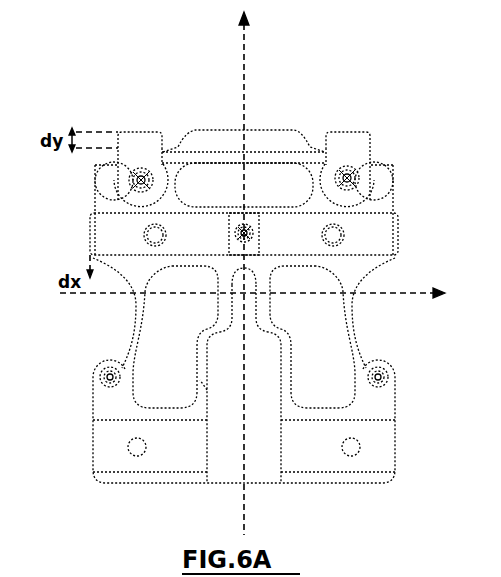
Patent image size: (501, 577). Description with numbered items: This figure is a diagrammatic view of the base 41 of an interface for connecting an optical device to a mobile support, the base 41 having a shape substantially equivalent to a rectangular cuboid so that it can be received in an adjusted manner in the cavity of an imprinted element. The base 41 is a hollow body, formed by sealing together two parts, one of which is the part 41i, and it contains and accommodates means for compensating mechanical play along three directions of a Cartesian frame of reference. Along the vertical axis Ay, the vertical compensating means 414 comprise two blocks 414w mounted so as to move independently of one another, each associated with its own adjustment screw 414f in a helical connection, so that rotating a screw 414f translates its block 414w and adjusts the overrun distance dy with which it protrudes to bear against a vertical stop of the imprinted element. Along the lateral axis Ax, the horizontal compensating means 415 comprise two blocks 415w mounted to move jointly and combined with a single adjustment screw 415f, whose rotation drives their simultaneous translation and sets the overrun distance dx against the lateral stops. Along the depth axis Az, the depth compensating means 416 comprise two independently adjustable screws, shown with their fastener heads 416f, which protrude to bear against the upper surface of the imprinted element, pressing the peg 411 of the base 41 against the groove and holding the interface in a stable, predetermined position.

The base 41 is at (347, 97).
The peg 411 is at (232, 138).
The vertical compensating means 414 is at (145, 131).
The block 414w is at (148, 147).
The adjustment screw 414f is at (139, 181).
The horizontal compensating means 415 is at (446, 293).
The block 415w is at (383, 232).
The adjustment screw 415f is at (250, 237).
The depth compensating means 416 is at (293, 370).
The lower portion fastener 416f is at (112, 376).
The part of the hollow body 41i is at (187, 412).